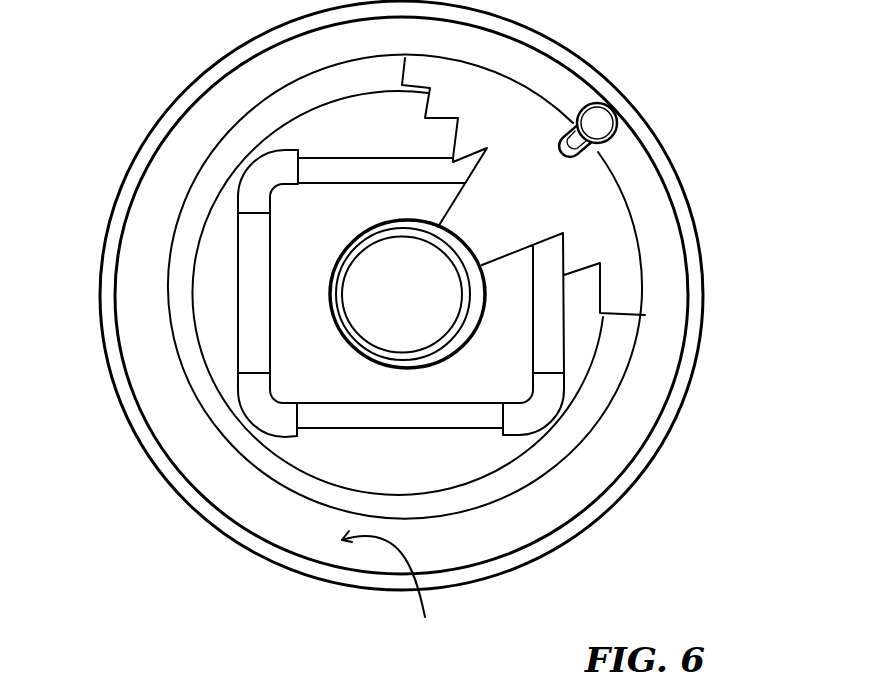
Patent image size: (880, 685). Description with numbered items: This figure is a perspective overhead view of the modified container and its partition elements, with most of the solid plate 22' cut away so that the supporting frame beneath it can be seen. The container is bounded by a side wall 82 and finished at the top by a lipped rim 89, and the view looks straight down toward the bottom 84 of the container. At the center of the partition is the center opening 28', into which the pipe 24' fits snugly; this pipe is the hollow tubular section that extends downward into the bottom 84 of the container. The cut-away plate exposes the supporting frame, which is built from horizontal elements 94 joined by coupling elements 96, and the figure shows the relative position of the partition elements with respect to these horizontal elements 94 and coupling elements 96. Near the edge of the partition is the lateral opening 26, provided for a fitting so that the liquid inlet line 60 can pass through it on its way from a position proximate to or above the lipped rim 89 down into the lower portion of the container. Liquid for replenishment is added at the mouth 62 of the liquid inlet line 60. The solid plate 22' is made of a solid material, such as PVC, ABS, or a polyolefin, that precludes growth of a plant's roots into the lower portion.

The lipped rim 89 is at (665, 418).
The lateral opening 26 is at (596, 153).
The bottom of the container 84 is at (473, 458).
The solid plate 22' is at (609, 215).
The horizontal elements 94 is at (253, 308).
The coupling elements 96 is at (257, 410).
The center opening 28' is at (325, 190).
The pipe 24' is at (351, 433).
The mouth 62 is at (607, 118).
The liquid inlet line 60 is at (585, 150).
The side wall 82 is at (391, 592).